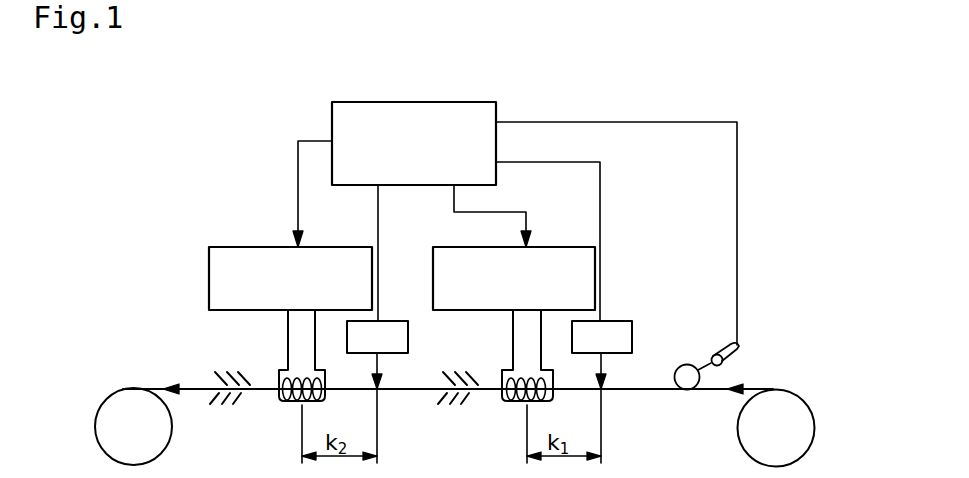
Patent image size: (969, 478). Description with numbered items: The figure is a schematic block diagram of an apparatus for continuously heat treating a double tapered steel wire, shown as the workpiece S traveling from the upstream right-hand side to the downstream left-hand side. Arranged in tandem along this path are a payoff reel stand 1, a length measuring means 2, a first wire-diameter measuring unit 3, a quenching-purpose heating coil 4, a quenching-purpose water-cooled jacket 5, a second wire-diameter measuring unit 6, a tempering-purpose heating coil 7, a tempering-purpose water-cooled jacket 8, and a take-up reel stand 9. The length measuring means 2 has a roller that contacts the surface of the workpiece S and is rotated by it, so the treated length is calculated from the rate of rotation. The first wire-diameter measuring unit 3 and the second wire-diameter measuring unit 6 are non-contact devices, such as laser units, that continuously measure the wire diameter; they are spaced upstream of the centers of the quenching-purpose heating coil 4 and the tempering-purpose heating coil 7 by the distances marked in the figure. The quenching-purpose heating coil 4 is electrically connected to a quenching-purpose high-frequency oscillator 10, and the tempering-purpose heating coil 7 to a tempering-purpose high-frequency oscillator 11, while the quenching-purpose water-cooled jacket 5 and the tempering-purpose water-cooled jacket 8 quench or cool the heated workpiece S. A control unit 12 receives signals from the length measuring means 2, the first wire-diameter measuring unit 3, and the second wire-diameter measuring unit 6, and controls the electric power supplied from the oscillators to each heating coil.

The payoff reel stand 1 is at (775, 403).
The length measuring means 2 is at (697, 356).
The first wire-diameter measuring unit 3 is at (622, 321).
The quenching-purpose heating coil 4 is at (516, 402).
The quenching-purpose water-cooled jacket 5 is at (461, 371).
The second wire-diameter measuring unit 6 is at (395, 321).
The tempering-purpose heating coil 7 is at (292, 402).
The tempering-purpose water-cooled jacket 8 is at (228, 370).
The take-up reel stand 9 is at (124, 398).
The quenching-purpose high-frequency oscillator 10 is at (542, 247).
The tempering-purpose high-frequency oscillator 11 is at (268, 247).
The control unit 12 is at (497, 107).
The workpiece S is at (656, 392).